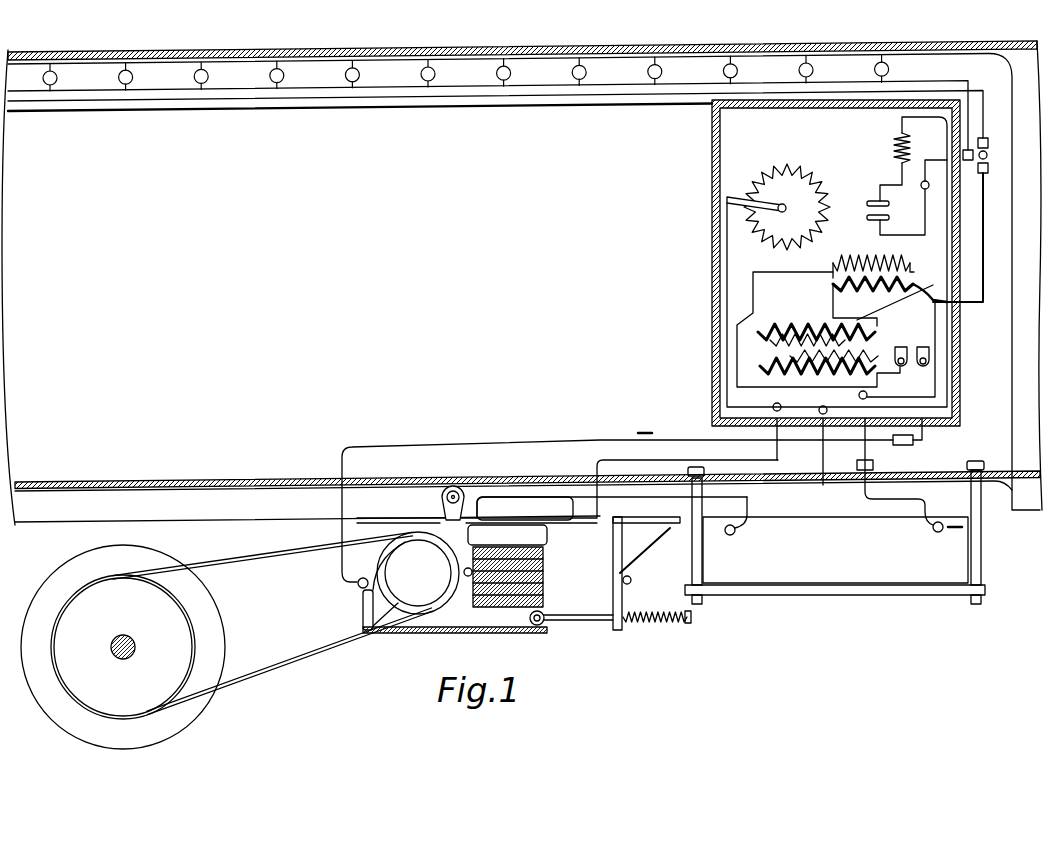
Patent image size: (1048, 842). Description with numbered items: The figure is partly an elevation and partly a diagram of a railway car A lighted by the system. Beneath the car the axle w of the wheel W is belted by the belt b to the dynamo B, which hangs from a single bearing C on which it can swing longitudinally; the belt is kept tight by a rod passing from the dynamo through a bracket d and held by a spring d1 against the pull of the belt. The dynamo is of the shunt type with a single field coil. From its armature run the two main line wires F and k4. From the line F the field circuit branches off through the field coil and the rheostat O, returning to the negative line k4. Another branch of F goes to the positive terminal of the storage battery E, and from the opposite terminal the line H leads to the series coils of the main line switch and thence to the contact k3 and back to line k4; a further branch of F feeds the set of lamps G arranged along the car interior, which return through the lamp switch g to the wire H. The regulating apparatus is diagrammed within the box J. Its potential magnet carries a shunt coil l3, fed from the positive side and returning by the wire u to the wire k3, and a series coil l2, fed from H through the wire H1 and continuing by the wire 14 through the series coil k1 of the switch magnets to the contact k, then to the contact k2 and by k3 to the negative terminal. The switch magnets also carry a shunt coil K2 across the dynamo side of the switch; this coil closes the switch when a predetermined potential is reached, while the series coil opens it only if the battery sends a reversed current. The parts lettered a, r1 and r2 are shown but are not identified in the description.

The set of lamps G is at (575, 49).
The railway car A is at (495, 167).
The car floor a is at (527, 496).
The wheel W is at (214, 620).
The axle w is at (134, 644).
The belt b is at (272, 623).
The single bearing C is at (552, 559).
The dynamo B is at (495, 580).
The main line wire F is at (687, 545).
The bracket d is at (657, 599).
The spring d1 is at (656, 626).
The storage battery E is at (835, 532).
The line H is at (862, 498).
The main line wire k4 is at (529, 436).
The regulator box J is at (712, 233).
The switch g is at (983, 155).
The wire H1 is at (937, 327).
The rheostat O is at (837, 262).
The contact plate r1 is at (888, 171).
The contact plate r2 is at (907, 197).
The shunt coil l3 is at (846, 256).
The series coil l2 is at (832, 285).
The wire u is at (818, 329).
The wire 14 is at (872, 302).
The shunt coil K2 is at (816, 323).
The series coil k1 is at (840, 378).
The contact k is at (901, 347).
The contact k2 is at (925, 345).
The wire k3 is at (846, 389).